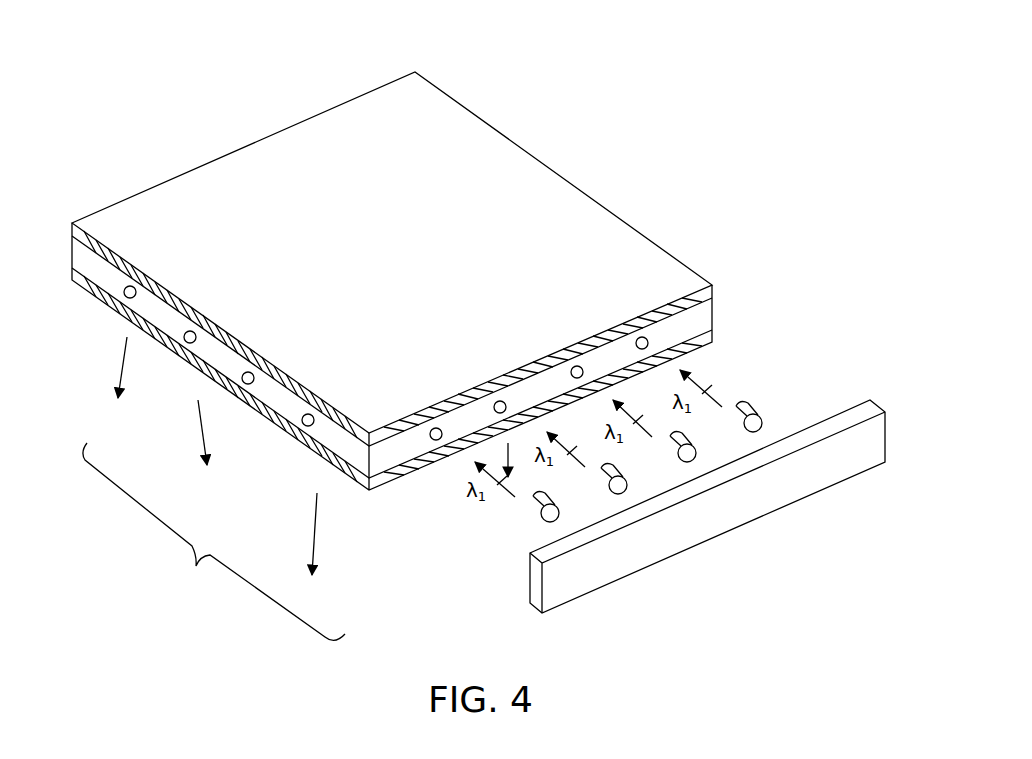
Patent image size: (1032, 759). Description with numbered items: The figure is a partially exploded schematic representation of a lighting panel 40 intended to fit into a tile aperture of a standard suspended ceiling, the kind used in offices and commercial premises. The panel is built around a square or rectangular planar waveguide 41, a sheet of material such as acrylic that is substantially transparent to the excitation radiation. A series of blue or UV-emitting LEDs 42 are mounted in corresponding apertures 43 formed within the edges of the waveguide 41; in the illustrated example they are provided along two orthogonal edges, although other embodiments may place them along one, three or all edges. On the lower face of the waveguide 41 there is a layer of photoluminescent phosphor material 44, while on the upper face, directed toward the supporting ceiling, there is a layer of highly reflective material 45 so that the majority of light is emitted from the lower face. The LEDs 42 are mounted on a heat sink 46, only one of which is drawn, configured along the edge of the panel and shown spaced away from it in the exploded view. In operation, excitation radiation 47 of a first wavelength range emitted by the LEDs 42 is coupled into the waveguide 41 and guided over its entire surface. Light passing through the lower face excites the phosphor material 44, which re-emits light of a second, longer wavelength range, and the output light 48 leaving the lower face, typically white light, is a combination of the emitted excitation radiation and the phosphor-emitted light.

The lighting panel 40 is at (658, 65).
The planar waveguide 41 is at (542, 188).
The LEDs 42 is at (745, 412).
The apertures 43 is at (126, 296).
The phosphor material layer 44 is at (715, 332).
The reflective material layer 45 is at (713, 292).
The heat sink 46 is at (717, 522).
The excitation radiation 47 is at (507, 493).
The output light 48 is at (214, 488).